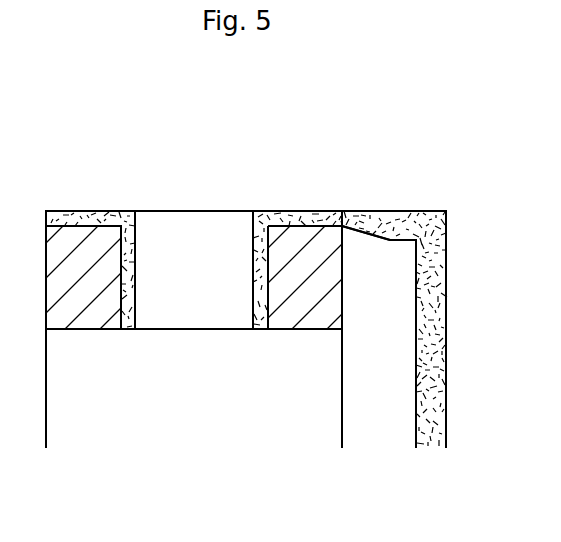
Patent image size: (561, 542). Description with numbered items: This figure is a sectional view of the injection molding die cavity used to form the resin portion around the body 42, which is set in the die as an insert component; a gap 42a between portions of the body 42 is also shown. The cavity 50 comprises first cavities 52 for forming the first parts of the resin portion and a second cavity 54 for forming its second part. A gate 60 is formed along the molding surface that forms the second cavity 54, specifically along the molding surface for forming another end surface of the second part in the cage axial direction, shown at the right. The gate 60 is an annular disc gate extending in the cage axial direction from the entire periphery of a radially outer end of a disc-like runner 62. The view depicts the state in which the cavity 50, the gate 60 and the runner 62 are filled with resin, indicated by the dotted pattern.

The body 42 is at (305, 300).
The gap between magnets 42a is at (203, 250).
The cavity 50 is at (292, 209).
The first cavities 52 is at (132, 264).
The second cavity 54 is at (85, 217).
The gate 60 is at (348, 218).
The runner 62 is at (433, 332).